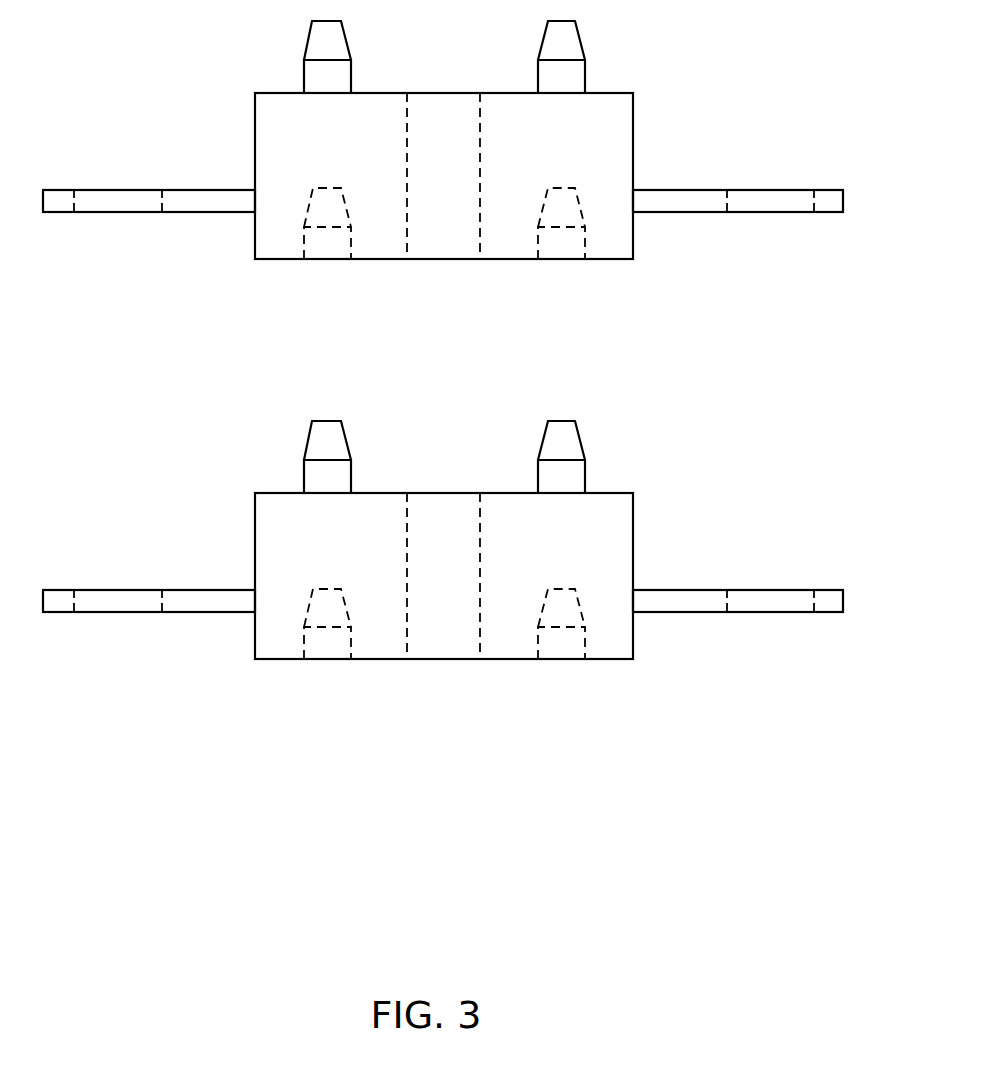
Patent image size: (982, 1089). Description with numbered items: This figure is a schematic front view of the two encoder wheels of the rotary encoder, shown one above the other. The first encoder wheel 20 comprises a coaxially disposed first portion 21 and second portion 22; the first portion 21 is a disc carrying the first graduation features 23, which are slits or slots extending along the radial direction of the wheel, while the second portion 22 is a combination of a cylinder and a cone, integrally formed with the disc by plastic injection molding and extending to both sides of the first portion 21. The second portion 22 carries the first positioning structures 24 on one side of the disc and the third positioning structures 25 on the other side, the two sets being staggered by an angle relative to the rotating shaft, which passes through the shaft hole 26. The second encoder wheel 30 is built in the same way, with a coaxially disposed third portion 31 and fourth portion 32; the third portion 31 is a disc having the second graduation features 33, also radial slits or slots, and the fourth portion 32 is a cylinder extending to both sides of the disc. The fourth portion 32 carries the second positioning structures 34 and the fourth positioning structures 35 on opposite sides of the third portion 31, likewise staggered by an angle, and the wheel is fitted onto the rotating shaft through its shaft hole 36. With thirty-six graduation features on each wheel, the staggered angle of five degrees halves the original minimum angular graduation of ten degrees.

The first encoder wheel 20 is at (256, 90).
The first portion 21 is at (833, 207).
The second portion 22 is at (618, 115).
The first graduation features 23 is at (728, 200).
The first positioning structures 24 is at (580, 195).
The third positioning structures 25 is at (572, 45).
The shaft hole 26 is at (407, 165).
The second encoder wheel 30 is at (257, 663).
The third portion 31 is at (833, 607).
The fourth portion 32 is at (627, 520).
The second graduation features 33 is at (728, 600).
The second positioning structures 34 is at (580, 445).
The fourth positioning structures 35 is at (580, 595).
The shaft hole 36 is at (407, 565).